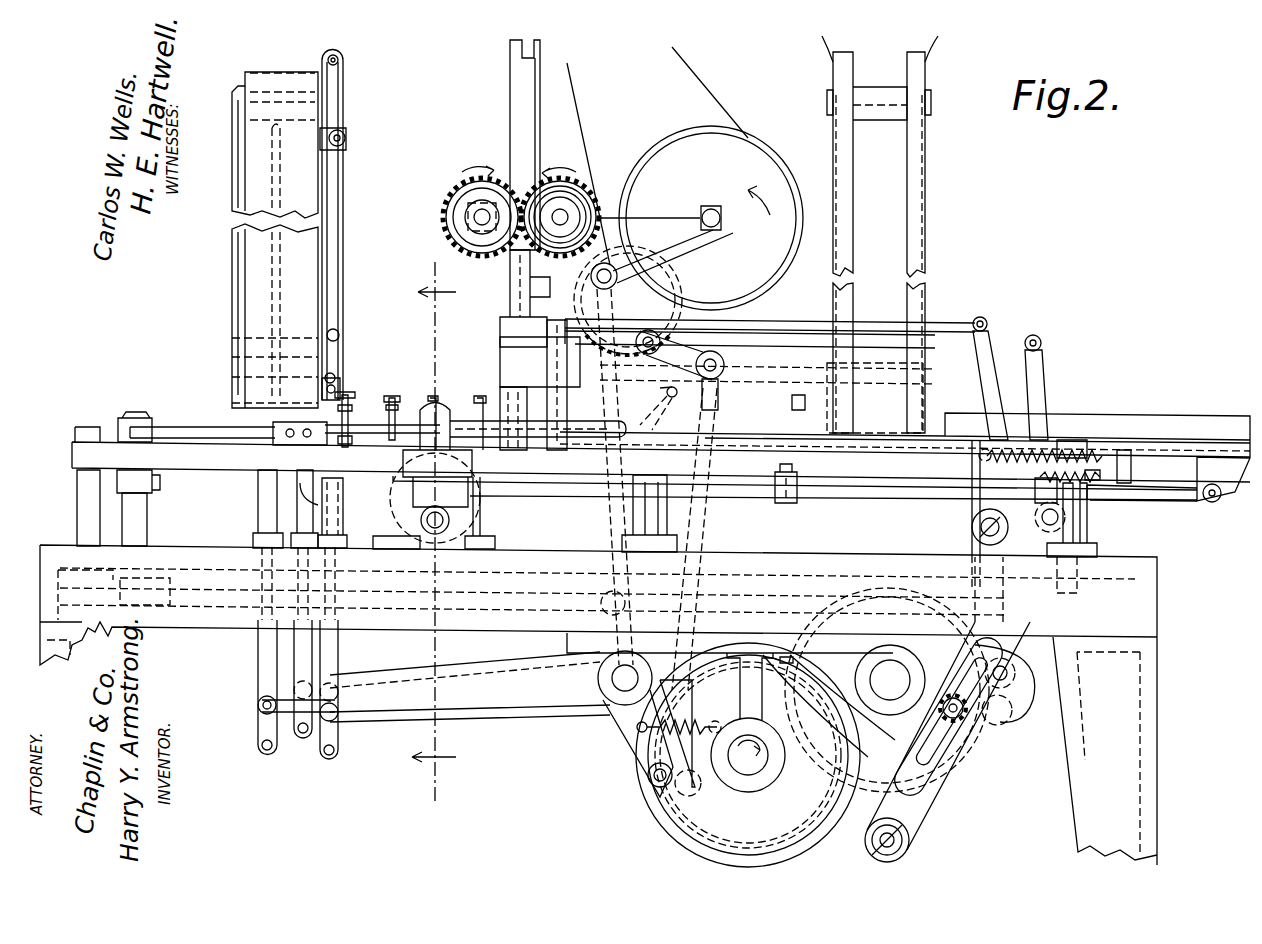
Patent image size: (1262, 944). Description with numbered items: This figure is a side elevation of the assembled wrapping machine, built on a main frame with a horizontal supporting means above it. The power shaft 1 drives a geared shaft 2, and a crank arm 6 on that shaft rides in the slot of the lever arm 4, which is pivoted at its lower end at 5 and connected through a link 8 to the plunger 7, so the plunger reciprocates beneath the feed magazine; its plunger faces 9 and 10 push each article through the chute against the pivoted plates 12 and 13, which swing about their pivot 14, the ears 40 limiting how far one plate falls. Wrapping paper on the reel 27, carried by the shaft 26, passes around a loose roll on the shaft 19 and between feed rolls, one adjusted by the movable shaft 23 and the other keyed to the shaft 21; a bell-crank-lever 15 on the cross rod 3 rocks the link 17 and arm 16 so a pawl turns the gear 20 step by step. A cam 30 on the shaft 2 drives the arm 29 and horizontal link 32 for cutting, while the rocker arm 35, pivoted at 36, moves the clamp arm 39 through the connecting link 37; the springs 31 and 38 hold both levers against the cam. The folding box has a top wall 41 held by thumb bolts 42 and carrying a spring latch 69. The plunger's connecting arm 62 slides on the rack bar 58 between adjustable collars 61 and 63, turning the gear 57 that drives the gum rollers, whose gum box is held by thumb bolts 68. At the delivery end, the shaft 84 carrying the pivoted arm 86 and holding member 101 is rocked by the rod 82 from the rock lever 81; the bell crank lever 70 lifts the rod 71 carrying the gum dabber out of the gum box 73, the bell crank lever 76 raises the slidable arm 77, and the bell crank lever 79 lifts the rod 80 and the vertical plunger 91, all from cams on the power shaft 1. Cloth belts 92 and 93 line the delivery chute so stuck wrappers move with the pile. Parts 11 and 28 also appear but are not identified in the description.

The power shaft 1 is at (760, 762).
The shaft 2 is at (844, 701).
The cross rod 3 is at (620, 688).
The lever arm 4 is at (945, 772).
The pivot 5 is at (434, 535).
The crank arm 6 is at (962, 718).
The plunger 7 is at (1195, 416).
The link 8 is at (1172, 504).
The plunger face 9 is at (932, 412).
The plunger face 10 is at (640, 448).
The block 11 is at (796, 394).
The pivoted plate 12 is at (632, 452).
The pivoted plate 13 is at (650, 377).
The pivot 14 is at (626, 430).
The bell-crank-lever 15 is at (728, 380).
The arm 16 is at (638, 348).
The link 17 is at (722, 358).
The shaft 19 is at (607, 265).
The gear 20 is at (662, 305).
The shaft 21 is at (566, 218).
The movable shaft 23 is at (444, 230).
The shaft 26 is at (720, 228).
The reel 27 is at (785, 170).
The roller 28 is at (972, 522).
The arm 29 is at (980, 368).
The cam 30 is at (935, 650).
The spring 31 is at (1122, 450).
The horizontal link 32 is at (932, 322).
The rocker arm 35 is at (1045, 368).
The pivot 36 is at (1040, 595).
The connecting link 37 is at (1010, 335).
The spring 38 is at (1132, 468).
The clamp arm 39 is at (540, 338).
The ears 40 is at (661, 397).
The top wall 41 is at (368, 420).
The thumb bolts 42 is at (352, 395).
The gear 57 is at (420, 500).
The rack bar 58 is at (618, 490).
The adjustable collar 61 is at (785, 503).
The connecting arm 62 is at (1035, 505).
The adjustable collar 63 is at (1095, 520).
The thumb bolts 68 is at (398, 398).
The spring latch 69 is at (340, 380).
The bell crank lever 70 is at (398, 722).
The rod 71 is at (338, 645).
The gum box 73 is at (345, 495).
The bell crank lever 76 is at (385, 690).
The slidable arm 77 is at (300, 665).
The bell crank lever 79 is at (640, 738).
The rod 80 is at (260, 645).
The rock lever 81 is at (655, 785).
The rod 82 is at (508, 625).
The shaft 84 is at (134, 416).
The pivoted arm 86 is at (217, 440).
The vertical plunger 91 is at (258, 475).
The cloth belt 92 is at (342, 228).
The cloth belt 93 is at (236, 202).
The holding member 101 is at (265, 452).